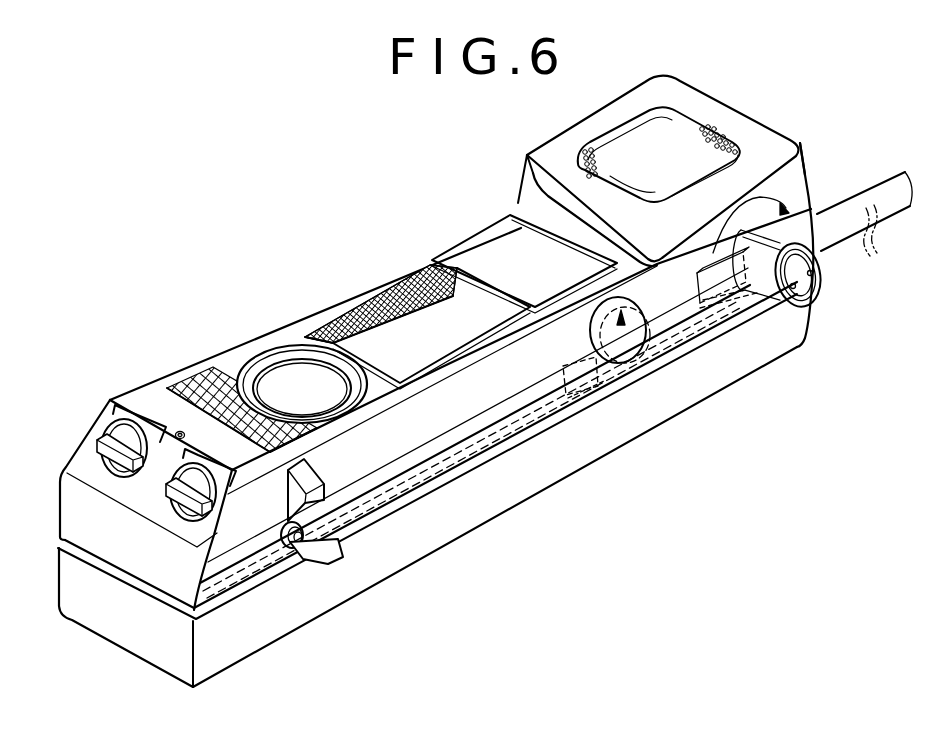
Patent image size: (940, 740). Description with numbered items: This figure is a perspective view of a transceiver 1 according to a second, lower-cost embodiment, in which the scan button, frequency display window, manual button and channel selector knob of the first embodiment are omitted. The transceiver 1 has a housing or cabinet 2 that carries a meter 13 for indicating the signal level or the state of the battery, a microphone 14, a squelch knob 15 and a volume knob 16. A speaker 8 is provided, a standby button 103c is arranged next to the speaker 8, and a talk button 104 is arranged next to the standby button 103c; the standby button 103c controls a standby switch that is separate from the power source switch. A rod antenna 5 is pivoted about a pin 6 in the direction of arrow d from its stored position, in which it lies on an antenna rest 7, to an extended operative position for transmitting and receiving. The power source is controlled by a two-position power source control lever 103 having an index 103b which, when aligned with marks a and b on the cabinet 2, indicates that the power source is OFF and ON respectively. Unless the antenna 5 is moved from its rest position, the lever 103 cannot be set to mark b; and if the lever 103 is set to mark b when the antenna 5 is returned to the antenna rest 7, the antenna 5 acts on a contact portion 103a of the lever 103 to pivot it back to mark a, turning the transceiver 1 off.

The transceiver 1 is at (365, 240).
The housing or cabinet 2 is at (447, 527).
The rod antenna 5 is at (437, 450).
The pin 6 is at (800, 279).
The antenna rest 7 is at (336, 556).
The speaker 8 is at (686, 134).
The meter 13 is at (288, 380).
The microphone 14 is at (207, 378).
The squelch knob 15 is at (100, 446).
The volume knob 16 is at (178, 497).
The power source control lever 103 is at (573, 366).
The contact portion 103a is at (595, 392).
The index 103b is at (641, 352).
The standby button 103c is at (487, 240).
The talk button 104 is at (344, 313).
The mark a is at (613, 297).
The mark b is at (627, 294).
The arrow d is at (758, 196).